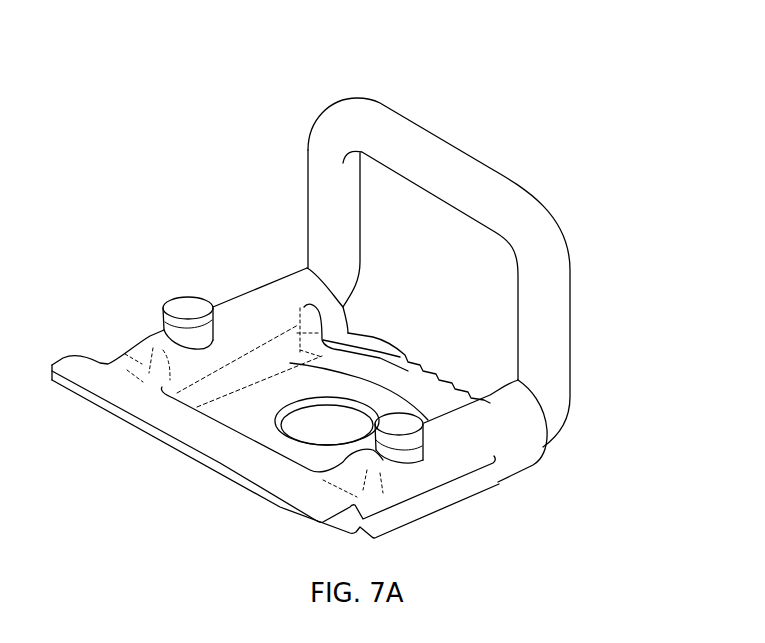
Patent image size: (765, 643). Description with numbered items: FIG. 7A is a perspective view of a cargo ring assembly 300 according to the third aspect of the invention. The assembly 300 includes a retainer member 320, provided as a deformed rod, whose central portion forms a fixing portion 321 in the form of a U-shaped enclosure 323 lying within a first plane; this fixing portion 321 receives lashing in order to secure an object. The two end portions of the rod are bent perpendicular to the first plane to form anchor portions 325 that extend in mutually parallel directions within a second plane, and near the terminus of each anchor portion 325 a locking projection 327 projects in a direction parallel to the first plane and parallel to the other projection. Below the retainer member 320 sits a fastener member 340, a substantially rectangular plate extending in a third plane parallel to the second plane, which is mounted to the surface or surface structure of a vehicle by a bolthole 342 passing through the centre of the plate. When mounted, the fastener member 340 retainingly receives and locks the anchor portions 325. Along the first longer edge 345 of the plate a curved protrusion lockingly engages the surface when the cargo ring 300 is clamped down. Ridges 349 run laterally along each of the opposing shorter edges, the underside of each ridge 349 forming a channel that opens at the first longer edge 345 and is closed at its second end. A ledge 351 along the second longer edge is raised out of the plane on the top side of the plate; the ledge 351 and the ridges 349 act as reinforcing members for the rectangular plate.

The cargo ring assembly 300 is at (305, 87).
The retainer member 320 is at (606, 308).
The fixing portion 321 is at (333, 185).
The U-shaped enclosure 323 is at (448, 277).
The anchor portion 325 is at (531, 472).
The locking projection 327 is at (190, 304).
The fastener member 340 is at (250, 418).
The bolthole 342 is at (328, 430).
The first longer edge 345 is at (385, 352).
The ridge 349 is at (265, 308).
The ledge 351 is at (113, 377).